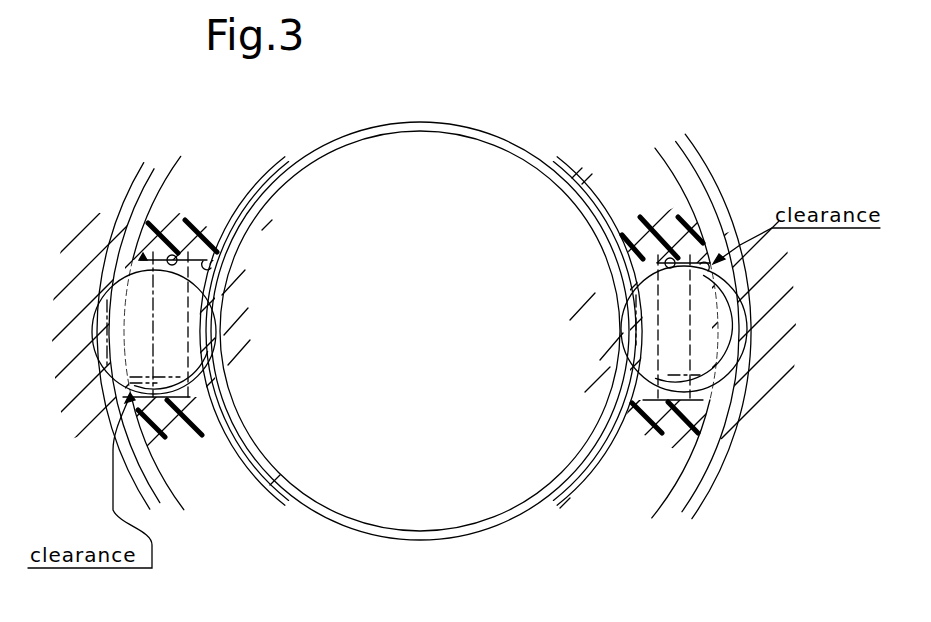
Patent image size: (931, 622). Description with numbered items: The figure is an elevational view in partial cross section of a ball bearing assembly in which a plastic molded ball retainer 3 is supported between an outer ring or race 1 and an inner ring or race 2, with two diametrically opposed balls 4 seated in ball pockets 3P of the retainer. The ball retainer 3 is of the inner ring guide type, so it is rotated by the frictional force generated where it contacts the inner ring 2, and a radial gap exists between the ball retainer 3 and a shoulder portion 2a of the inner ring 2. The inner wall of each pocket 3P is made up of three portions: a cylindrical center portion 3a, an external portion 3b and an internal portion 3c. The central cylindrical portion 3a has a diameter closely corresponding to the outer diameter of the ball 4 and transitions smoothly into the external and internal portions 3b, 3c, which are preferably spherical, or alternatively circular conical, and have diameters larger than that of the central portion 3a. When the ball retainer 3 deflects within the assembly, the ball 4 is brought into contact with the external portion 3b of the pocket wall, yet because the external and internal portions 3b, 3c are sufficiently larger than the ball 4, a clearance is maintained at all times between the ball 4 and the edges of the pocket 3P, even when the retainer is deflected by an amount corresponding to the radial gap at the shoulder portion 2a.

The outer ring or race 1 is at (134, 498).
The inner ring or race 2 is at (510, 163).
The shoulder portion of inner ring 2a is at (465, 125).
The ball retainer 3 is at (215, 435).
The cylindrical center portion 3a is at (170, 255).
The external portion 3b is at (141, 266).
The internal portion 3c is at (210, 269).
The pocket 3P is at (208, 398).
The ball 4 is at (102, 397).